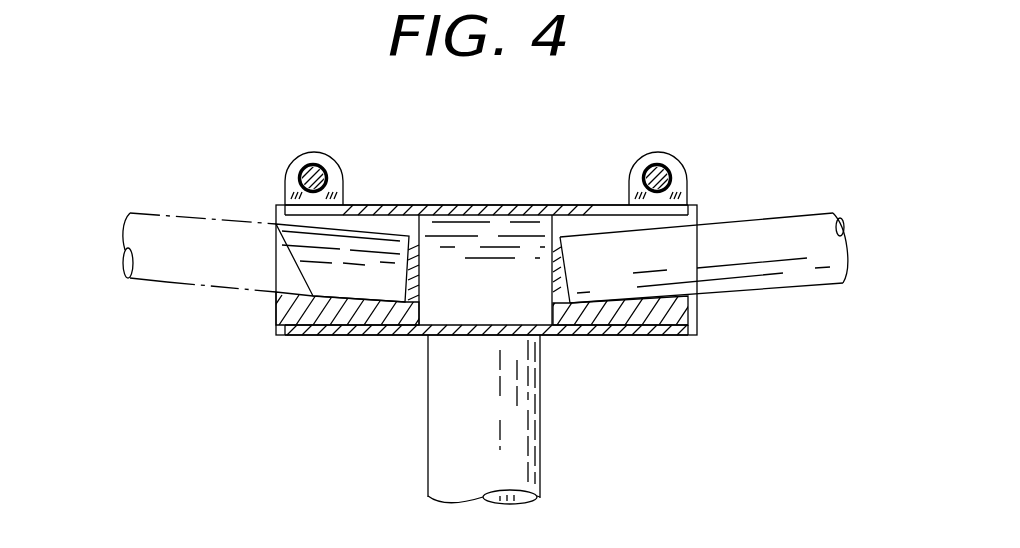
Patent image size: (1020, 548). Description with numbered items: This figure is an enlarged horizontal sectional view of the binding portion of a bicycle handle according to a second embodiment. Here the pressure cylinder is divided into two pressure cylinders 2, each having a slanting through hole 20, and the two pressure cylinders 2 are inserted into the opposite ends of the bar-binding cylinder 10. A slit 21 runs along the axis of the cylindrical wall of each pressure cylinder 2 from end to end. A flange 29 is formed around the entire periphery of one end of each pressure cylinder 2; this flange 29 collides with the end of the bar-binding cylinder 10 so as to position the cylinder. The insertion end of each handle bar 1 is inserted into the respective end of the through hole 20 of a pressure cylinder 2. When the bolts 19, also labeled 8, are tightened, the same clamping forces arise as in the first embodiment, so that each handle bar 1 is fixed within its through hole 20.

The handle bar 1 is at (793, 273).
The pressure cylinder 2 is at (293, 307).
The pin (lug bolt) 8 is at (648, 167).
The bar-binding cylinder 10 is at (567, 335).
The bolt 19 is at (324, 166).
The through hole 20 is at (313, 295).
The slit 21 is at (357, 223).
The flange 29 is at (697, 208).